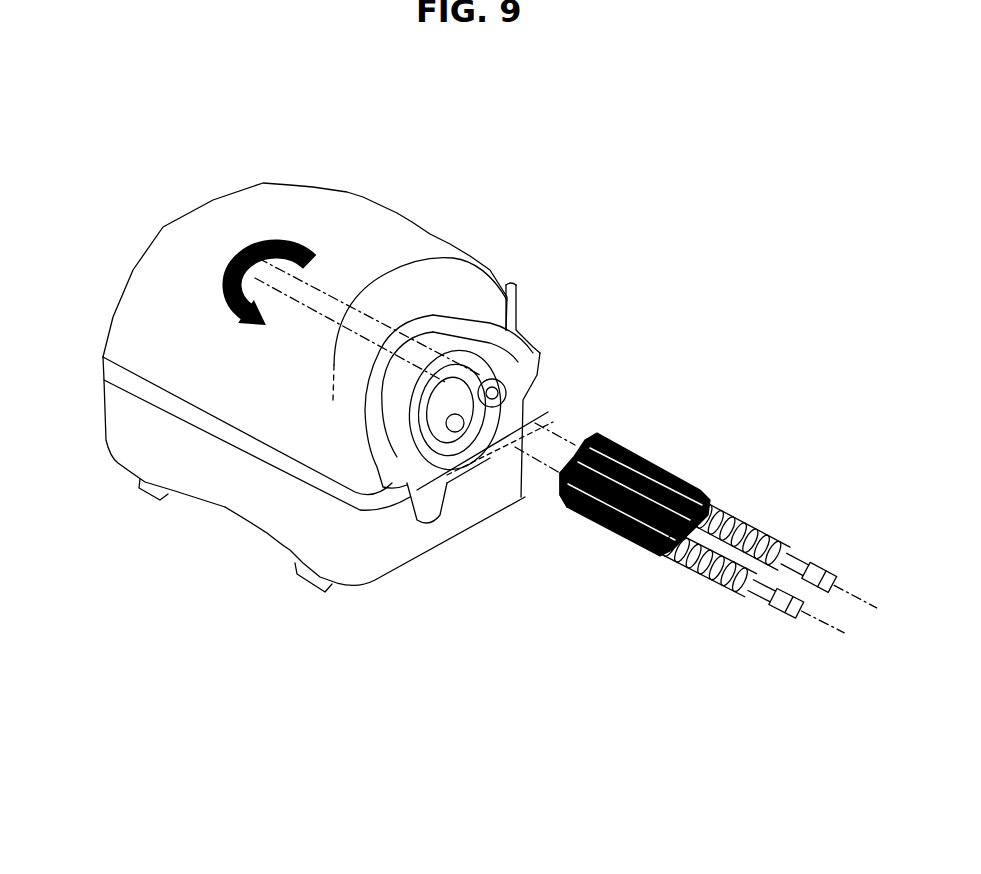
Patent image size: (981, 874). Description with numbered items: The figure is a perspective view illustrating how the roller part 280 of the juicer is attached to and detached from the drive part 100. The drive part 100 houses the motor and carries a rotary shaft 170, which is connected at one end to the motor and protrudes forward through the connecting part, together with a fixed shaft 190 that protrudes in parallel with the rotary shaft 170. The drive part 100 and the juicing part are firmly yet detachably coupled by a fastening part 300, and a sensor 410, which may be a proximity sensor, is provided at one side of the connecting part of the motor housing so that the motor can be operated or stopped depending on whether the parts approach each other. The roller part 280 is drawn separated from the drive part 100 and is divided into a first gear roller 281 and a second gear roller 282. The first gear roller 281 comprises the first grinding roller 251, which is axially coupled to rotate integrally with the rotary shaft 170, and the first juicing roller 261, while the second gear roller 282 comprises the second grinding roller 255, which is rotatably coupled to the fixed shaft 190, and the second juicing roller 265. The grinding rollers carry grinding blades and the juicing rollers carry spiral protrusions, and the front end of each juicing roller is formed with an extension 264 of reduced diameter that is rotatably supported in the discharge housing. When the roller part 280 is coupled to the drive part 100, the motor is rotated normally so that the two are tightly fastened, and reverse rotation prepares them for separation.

The drive part 100 is at (208, 188).
The rotary shaft 170 is at (462, 430).
The fixed shaft 190 is at (423, 520).
The fastening part 300 is at (509, 287).
The sensor 410 is at (463, 413).
The roller part 280 is at (757, 382).
The first gear roller 281 is at (663, 463).
The second gear roller 282 is at (573, 520).
The first grinding roller 251 is at (690, 495).
The second grinding roller 255 is at (625, 530).
The first juicing roller 261 is at (763, 523).
The extension 264 is at (827, 567).
The second juicing roller 265 is at (677, 556).